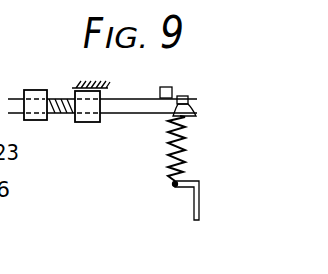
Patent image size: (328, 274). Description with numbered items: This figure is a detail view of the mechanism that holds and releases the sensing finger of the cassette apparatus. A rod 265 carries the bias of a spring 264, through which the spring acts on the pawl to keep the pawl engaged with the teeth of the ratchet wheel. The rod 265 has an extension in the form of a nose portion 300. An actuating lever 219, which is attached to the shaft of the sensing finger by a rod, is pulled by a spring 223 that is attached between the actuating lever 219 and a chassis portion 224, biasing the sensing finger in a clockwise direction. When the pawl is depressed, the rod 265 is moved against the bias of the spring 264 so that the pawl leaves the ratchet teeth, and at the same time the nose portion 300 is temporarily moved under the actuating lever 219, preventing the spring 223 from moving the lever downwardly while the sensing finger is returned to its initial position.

The rod 265 is at (14, 97).
The spring 264 is at (63, 116).
The actuating lever 219 is at (168, 87).
The nose portion 300 is at (189, 101).
The spring 223 is at (186, 153).
The chassis portion 224 is at (187, 207).